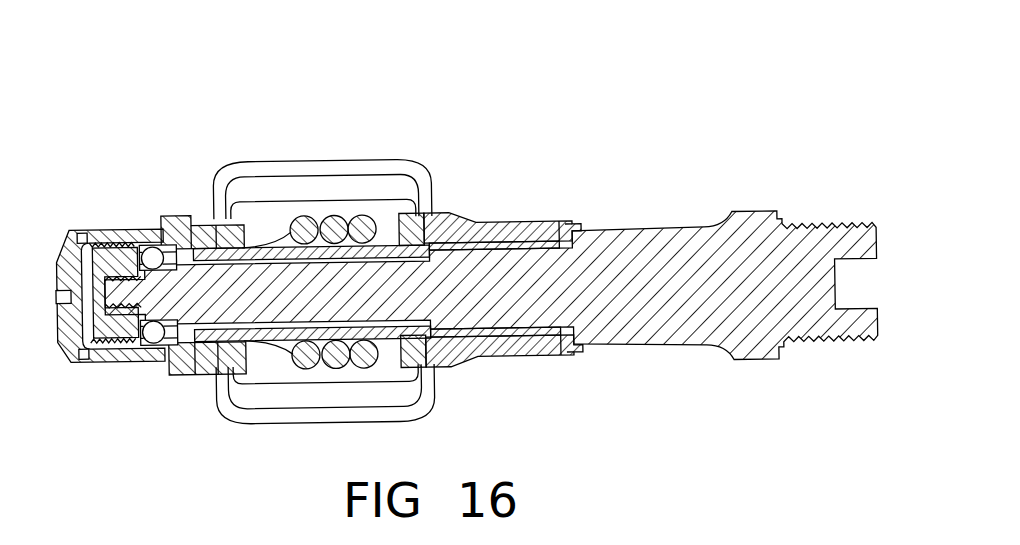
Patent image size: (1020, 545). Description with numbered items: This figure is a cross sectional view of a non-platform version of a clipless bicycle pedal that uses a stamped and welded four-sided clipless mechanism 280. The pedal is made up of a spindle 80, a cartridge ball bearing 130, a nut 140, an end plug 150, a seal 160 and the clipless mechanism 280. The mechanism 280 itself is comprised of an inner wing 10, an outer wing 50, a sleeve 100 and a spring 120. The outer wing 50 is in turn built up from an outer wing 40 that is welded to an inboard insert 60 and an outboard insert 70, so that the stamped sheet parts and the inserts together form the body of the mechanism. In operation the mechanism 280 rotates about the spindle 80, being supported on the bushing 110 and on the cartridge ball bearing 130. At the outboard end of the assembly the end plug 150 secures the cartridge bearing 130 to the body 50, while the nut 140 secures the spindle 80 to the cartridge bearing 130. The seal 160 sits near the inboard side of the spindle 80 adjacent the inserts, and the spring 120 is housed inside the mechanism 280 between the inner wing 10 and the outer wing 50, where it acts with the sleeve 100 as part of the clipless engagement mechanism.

The inner wing 10 is at (277, 420).
The outer wing 40 is at (340, 167).
The outer wing 50 is at (362, 167).
The inboard insert 60 is at (497, 223).
The outboard insert 70 is at (137, 357).
The spindle 80 is at (653, 327).
The sleeve 100 is at (265, 255).
The bushing 110 is at (520, 243).
The spring 120 is at (363, 222).
The cartridge ball bearing 130 is at (153, 255).
The nut 140 is at (112, 267).
The end plug 150 is at (68, 333).
The seal 160 is at (580, 228).
The four-sided clipless mechanism 280 is at (308, 170).